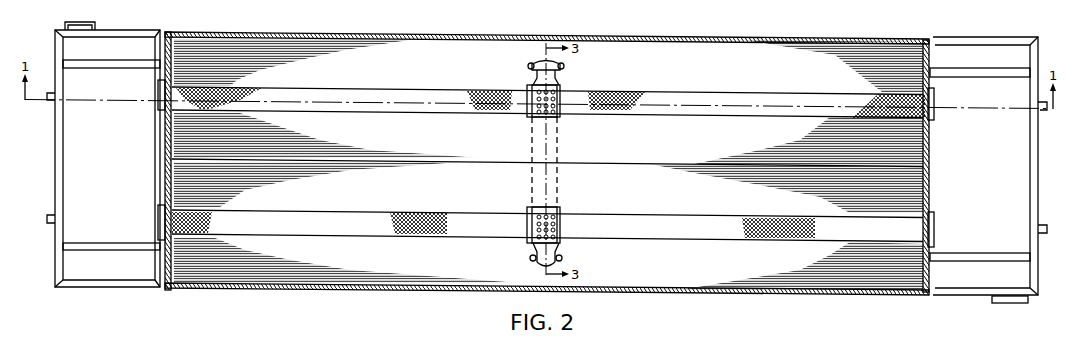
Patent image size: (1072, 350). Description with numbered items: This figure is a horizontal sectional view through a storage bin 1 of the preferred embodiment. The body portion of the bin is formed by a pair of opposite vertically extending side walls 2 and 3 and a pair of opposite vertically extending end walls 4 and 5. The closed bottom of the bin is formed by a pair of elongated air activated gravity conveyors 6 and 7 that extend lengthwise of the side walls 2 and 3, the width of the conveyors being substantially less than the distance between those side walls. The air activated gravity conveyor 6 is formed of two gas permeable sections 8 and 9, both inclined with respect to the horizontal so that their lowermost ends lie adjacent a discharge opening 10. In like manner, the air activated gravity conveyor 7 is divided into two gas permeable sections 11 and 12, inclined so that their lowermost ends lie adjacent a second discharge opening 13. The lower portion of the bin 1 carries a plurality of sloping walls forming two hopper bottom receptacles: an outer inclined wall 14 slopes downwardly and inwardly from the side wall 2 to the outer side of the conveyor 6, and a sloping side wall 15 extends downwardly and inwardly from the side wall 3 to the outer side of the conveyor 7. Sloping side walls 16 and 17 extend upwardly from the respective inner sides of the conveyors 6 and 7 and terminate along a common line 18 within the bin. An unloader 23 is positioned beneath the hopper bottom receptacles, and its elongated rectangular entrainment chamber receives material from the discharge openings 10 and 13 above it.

The storage bin 1 is at (874, 32).
The side wall 2 is at (762, 32).
The side wall 3 is at (770, 293).
The end wall 4 is at (929, 153).
The end wall 5 is at (165, 126).
The air activated gravity conveyor 6 is at (326, 86).
The air activated gravity conveyor 7 is at (326, 240).
The gas permeable section 8 is at (423, 108).
The gas permeable section 9 is at (722, 113).
The discharge opening 10 is at (556, 94).
The gas permeable section 11 is at (372, 234).
The gas permeable section 12 is at (640, 236).
The second discharge opening 13 is at (533, 229).
The outer inclined wall 14 is at (816, 52).
The sloping side wall 15 is at (840, 282).
The sloping side wall 16 is at (912, 138).
The sloping side wall 17 is at (914, 195).
The common line 18 is at (713, 163).
The unloader 23 is at (558, 140).